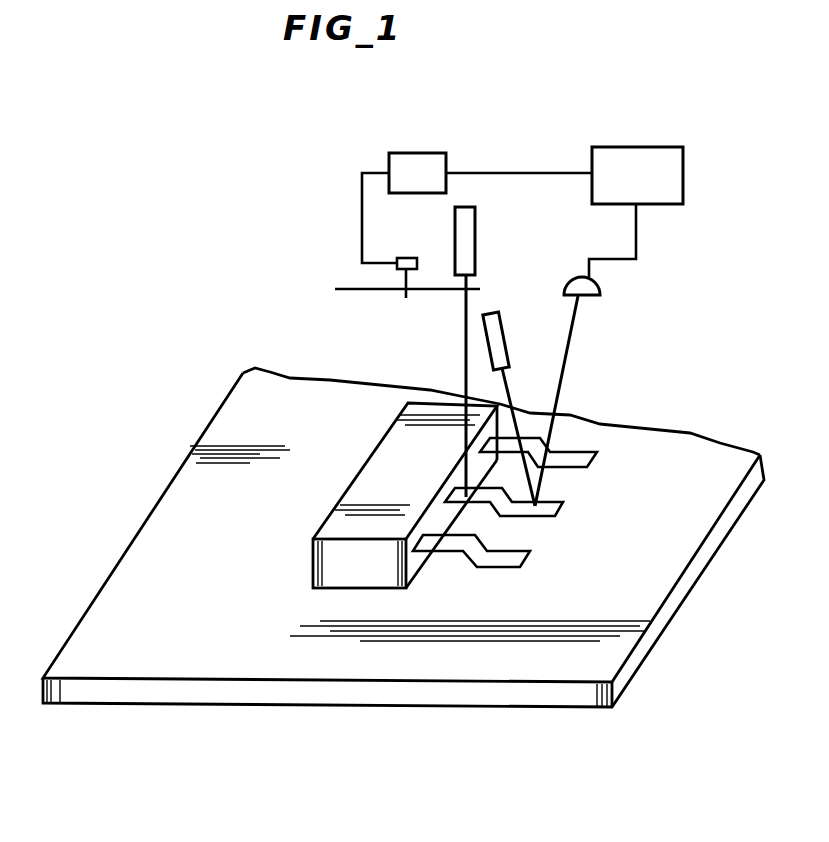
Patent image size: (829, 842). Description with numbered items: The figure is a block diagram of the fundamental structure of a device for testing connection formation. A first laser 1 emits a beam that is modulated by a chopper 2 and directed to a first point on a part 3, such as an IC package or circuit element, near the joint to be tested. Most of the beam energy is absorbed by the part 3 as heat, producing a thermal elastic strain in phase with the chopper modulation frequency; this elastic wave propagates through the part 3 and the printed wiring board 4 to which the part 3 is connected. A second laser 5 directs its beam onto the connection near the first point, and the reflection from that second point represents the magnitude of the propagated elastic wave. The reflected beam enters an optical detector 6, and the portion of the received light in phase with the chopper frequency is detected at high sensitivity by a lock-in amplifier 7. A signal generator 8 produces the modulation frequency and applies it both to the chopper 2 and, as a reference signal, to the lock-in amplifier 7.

The first laser 1 is at (476, 233).
The chopper 2 is at (345, 289).
The part 3 is at (347, 487).
The printed wiring board 4 is at (447, 706).
The second laser 5 is at (507, 335).
The optical detector 6 is at (600, 292).
The lock-in amplifier 7 is at (675, 147).
The signal generator 8 is at (423, 153).